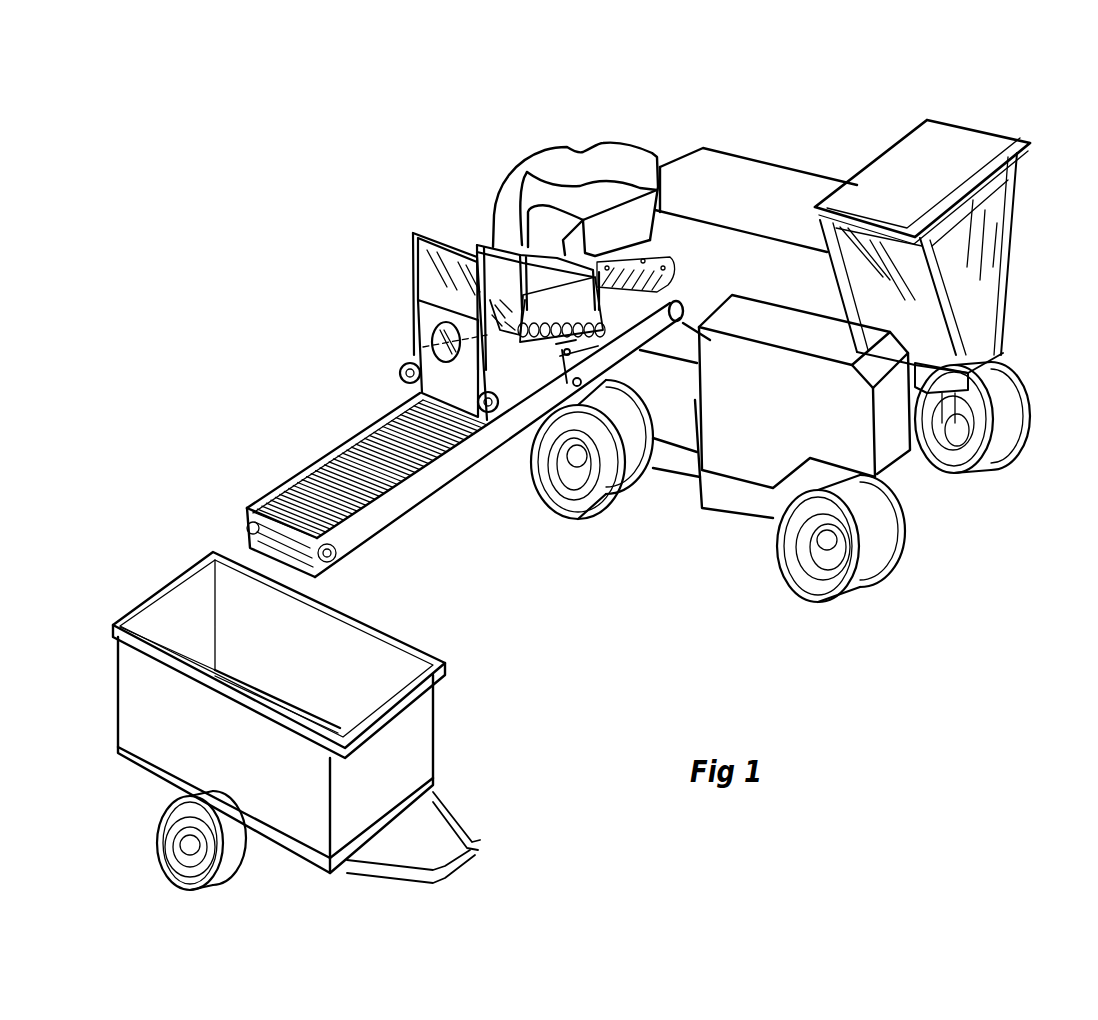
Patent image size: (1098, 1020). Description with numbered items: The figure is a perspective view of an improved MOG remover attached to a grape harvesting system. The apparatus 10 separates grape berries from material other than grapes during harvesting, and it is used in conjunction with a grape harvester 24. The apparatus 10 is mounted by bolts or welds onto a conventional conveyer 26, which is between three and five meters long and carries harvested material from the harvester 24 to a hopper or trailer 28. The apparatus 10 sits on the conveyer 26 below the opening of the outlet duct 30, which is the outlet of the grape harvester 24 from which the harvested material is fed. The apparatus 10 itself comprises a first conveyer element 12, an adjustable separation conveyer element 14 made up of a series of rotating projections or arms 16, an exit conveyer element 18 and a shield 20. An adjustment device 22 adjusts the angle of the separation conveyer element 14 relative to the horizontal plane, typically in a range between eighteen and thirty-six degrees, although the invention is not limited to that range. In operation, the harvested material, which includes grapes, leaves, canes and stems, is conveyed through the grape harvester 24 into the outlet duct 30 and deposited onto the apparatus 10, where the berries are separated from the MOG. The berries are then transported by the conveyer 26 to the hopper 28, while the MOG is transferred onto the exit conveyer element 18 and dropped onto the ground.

The apparatus 10 is at (398, 175).
The first conveyer element 12 is at (642, 278).
The adjustable separation conveyer element 14 is at (548, 312).
The rotating projections or arms 16 is at (503, 247).
The exit conveyer element 18 is at (402, 371).
The shield 20 is at (425, 275).
The adjustment device 22 is at (567, 388).
The grape harvester 24 is at (987, 117).
The conveyer 26 is at (388, 512).
The hopper or trailer 28 is at (231, 760).
The outlet duct 30 is at (636, 147).